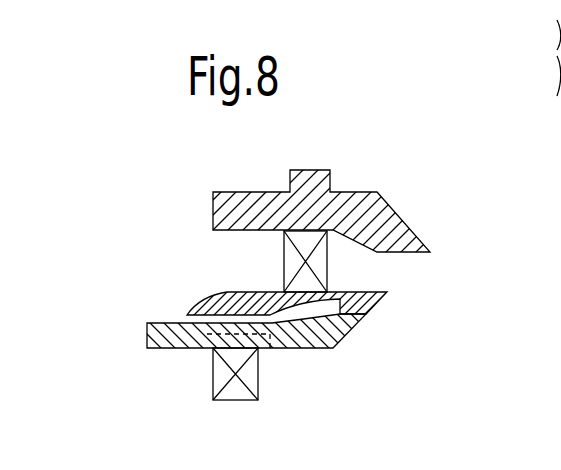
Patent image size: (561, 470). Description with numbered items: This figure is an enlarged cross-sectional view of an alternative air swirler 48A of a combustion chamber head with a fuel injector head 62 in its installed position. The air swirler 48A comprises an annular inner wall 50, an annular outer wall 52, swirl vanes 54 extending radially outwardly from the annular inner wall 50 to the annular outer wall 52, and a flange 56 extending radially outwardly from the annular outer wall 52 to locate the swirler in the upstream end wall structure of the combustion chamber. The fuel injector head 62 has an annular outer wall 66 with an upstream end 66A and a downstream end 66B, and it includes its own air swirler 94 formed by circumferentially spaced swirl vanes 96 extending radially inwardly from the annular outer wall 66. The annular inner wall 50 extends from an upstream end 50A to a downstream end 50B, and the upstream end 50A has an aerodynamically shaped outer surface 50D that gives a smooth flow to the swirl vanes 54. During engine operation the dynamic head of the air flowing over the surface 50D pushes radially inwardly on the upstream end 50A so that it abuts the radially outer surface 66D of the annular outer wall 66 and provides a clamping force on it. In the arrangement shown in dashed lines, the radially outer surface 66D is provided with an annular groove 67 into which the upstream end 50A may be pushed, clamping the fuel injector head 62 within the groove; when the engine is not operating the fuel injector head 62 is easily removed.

The air swirler 48A is at (432, 187).
The annular outer wall 52 is at (370, 215).
The swirl vanes 54 is at (300, 240).
The flange 56 is at (312, 172).
The annular inner wall 50 is at (332, 291).
The upstream end 50A is at (207, 305).
The downstream end 50B is at (389, 296).
The aerodynamically shaped outer surface 50D is at (230, 291).
The fuel injector head 62 is at (130, 290).
The annular outer wall 66 is at (302, 337).
The upstream end 66A is at (158, 338).
The downstream end 66B is at (337, 340).
The radially outer surface 66D is at (208, 327).
The annular groove 67 is at (270, 348).
The air swirler 94 is at (228, 400).
The swirl vanes 96 is at (243, 393).